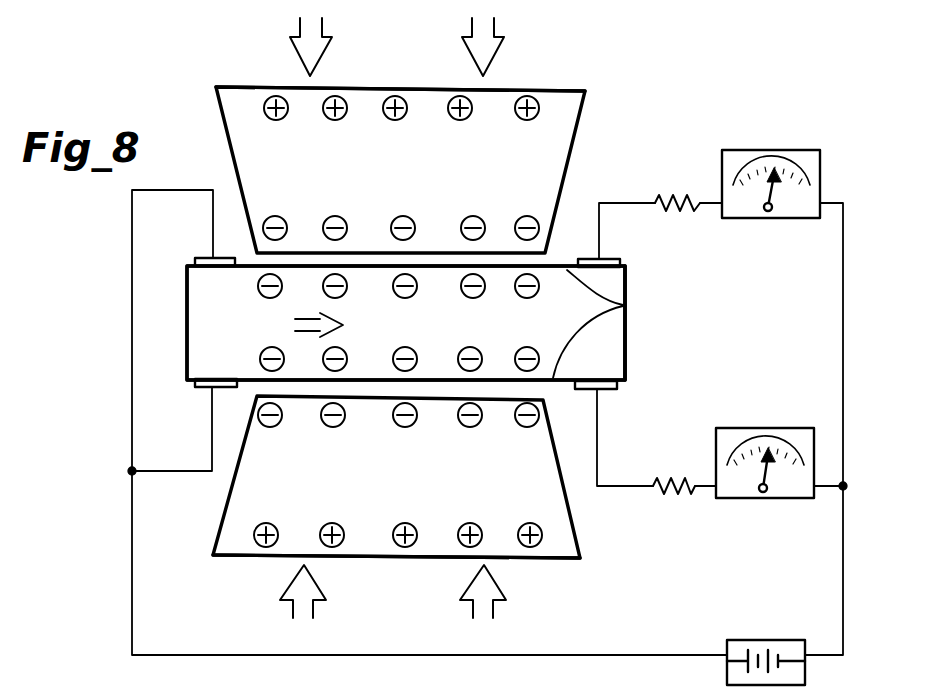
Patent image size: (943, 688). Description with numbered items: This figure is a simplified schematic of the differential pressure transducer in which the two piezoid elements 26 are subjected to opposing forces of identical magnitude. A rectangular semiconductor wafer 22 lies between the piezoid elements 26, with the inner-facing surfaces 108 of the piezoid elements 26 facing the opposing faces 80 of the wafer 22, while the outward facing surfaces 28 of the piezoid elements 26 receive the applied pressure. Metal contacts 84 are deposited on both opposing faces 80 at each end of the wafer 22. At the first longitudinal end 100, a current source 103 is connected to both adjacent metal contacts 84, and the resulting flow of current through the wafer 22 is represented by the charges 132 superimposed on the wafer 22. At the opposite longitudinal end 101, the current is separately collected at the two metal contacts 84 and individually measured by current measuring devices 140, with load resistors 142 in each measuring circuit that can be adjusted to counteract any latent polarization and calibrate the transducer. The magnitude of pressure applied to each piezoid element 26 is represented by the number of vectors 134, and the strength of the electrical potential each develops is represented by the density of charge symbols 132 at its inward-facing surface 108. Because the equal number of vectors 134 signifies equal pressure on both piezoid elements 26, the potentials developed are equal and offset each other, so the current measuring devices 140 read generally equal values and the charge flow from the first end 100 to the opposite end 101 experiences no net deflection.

The semiconductor wafer 22 is at (187, 325).
The piezoid element 26 is at (588, 92).
The outward facing surface 28 is at (509, 92).
The opposing face 80 is at (623, 306).
The metal contact 84 is at (205, 258).
The first longitudinal end 100 is at (187, 345).
The opposite longitudinal end 101 is at (626, 352).
The current source 103 is at (773, 640).
The inner-facing surface 108 is at (497, 253).
The charge symbols 132 is at (270, 348).
The vectors 134 is at (298, 44).
The current measuring device 140 is at (775, 150).
The load resistor 142 is at (678, 200).